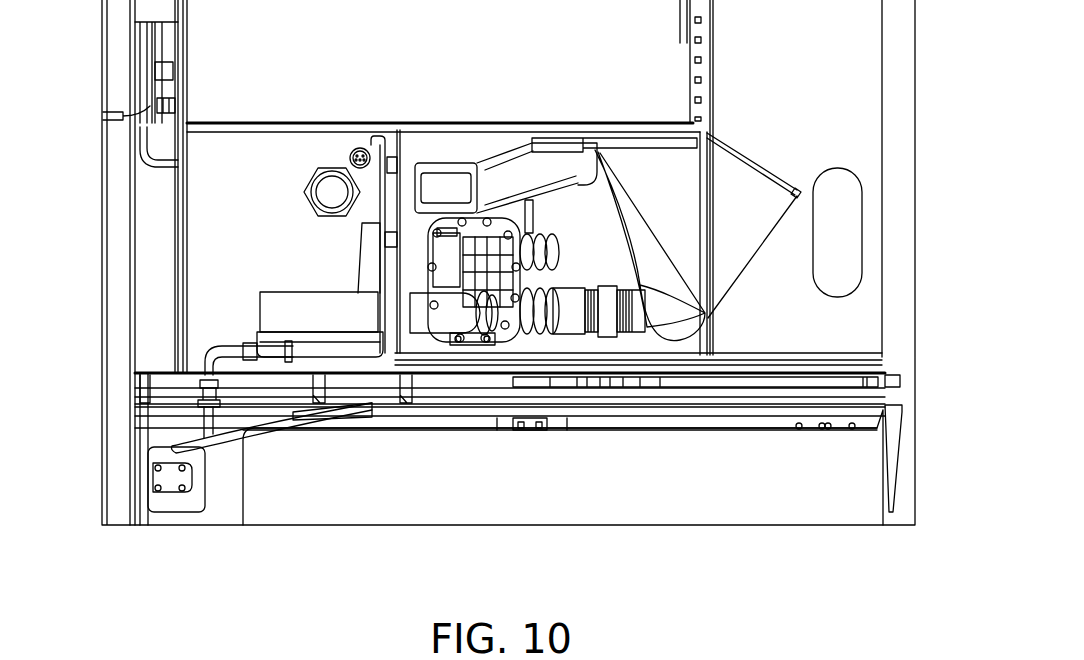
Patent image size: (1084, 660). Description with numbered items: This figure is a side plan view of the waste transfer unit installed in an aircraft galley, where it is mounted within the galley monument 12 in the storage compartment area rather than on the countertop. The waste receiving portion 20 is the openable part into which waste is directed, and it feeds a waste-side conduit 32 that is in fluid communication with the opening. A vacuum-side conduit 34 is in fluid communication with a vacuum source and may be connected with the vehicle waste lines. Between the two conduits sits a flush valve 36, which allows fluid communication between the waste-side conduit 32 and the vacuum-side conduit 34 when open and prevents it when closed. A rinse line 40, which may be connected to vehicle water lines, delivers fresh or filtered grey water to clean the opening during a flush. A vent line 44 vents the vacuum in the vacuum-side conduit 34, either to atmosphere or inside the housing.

The aircraft galley monument 12 is at (475, 45).
The waste receiving portion 20 is at (755, 188).
The vent line 44 is at (324, 193).
The rinse line 40 is at (217, 350).
The vacuum-side conduit 34 is at (297, 317).
The flush valve 36 is at (492, 303).
The waste-side conduit 32 is at (543, 325).